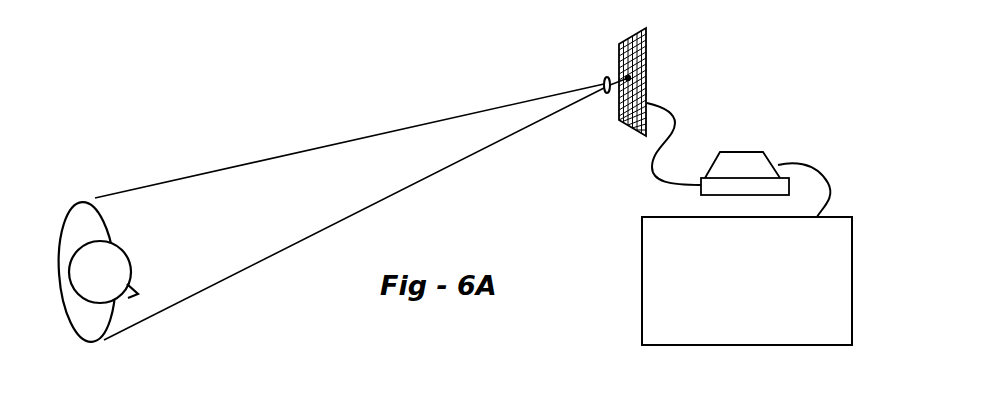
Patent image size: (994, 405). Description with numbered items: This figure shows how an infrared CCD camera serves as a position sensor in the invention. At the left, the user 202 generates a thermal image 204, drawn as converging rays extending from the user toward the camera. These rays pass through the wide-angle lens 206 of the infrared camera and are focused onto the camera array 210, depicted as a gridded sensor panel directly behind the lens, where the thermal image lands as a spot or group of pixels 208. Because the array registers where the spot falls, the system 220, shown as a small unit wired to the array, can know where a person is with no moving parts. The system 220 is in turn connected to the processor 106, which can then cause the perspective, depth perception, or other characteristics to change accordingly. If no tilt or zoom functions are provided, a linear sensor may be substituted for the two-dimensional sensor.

The user 202 is at (75, 272).
The thermal image 204 is at (349, 212).
The wide-angle lens 206 is at (604, 78).
The sensor pixel / image point 208 is at (622, 77).
The camera array 210 is at (620, 119).
The system 220 is at (745, 160).
The processor 106 is at (747, 281).